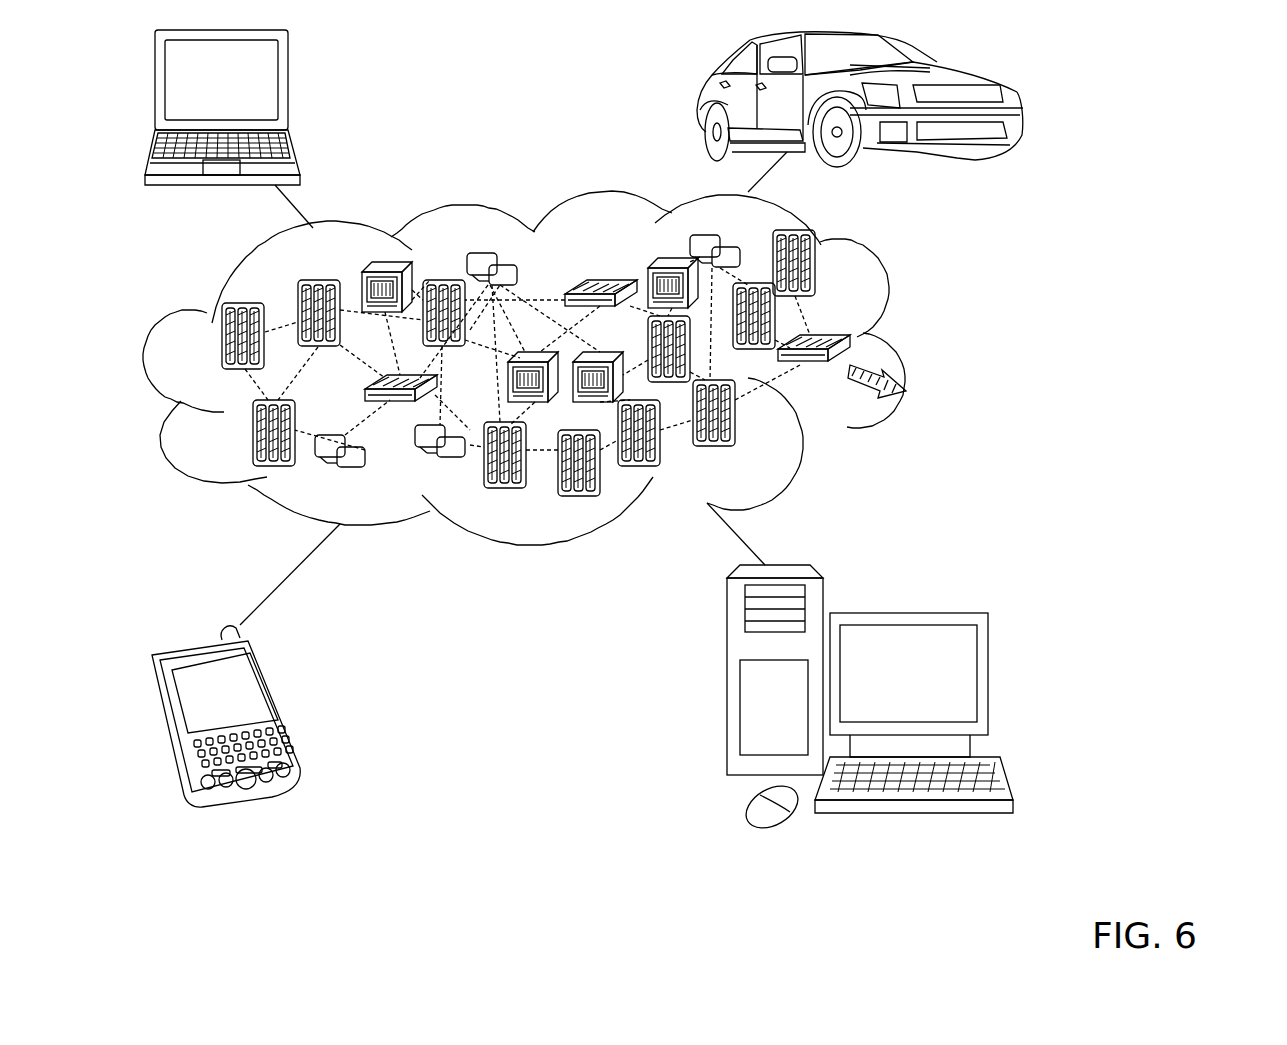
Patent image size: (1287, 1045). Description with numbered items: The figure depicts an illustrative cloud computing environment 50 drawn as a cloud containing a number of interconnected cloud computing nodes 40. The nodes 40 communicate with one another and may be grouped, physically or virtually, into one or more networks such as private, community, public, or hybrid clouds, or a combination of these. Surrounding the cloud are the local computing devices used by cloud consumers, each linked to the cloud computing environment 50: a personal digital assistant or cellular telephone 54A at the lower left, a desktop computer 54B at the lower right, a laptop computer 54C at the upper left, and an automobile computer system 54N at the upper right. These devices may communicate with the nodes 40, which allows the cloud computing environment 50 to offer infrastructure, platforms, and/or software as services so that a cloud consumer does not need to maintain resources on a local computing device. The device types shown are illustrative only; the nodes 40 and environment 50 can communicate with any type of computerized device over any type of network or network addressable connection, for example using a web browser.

The cloud computing environment 50 is at (907, 353).
The cloud computing nodes 40 is at (899, 389).
The personal digital assistant or cellular telephone 54A is at (285, 706).
The desktop computer 54B is at (905, 612).
The laptop computer 54C is at (289, 90).
The automobile computer system 54N is at (697, 103).